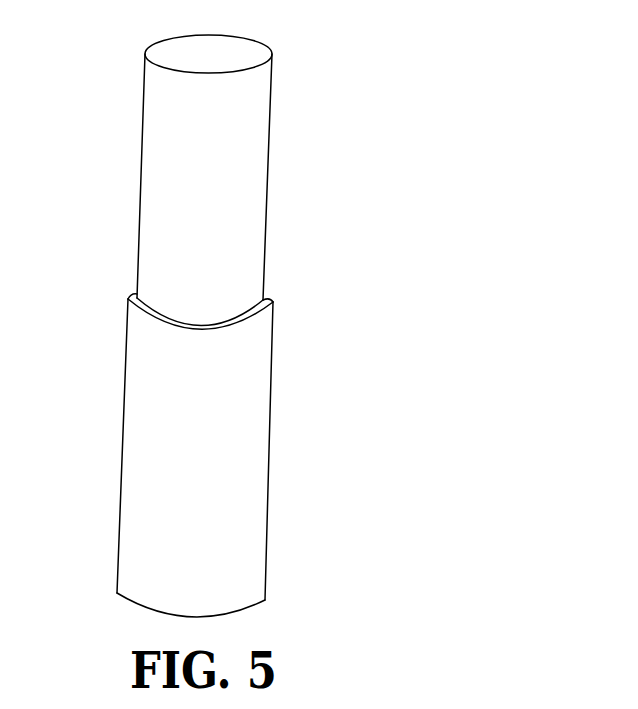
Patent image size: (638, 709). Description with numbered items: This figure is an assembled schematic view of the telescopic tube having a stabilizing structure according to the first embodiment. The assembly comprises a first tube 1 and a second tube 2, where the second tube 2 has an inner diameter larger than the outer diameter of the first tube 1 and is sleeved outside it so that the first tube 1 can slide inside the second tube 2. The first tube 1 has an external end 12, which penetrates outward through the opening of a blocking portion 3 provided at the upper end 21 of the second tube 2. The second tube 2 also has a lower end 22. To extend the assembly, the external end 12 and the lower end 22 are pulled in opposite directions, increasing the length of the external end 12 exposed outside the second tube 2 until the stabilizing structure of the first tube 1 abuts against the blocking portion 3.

The first tube 1 is at (184, 180).
The second tube 2 is at (192, 458).
The blocking portion 3 is at (268, 300).
The external end 12 is at (272, 177).
The upper end 21 is at (273, 387).
The lower end 22 is at (268, 577).